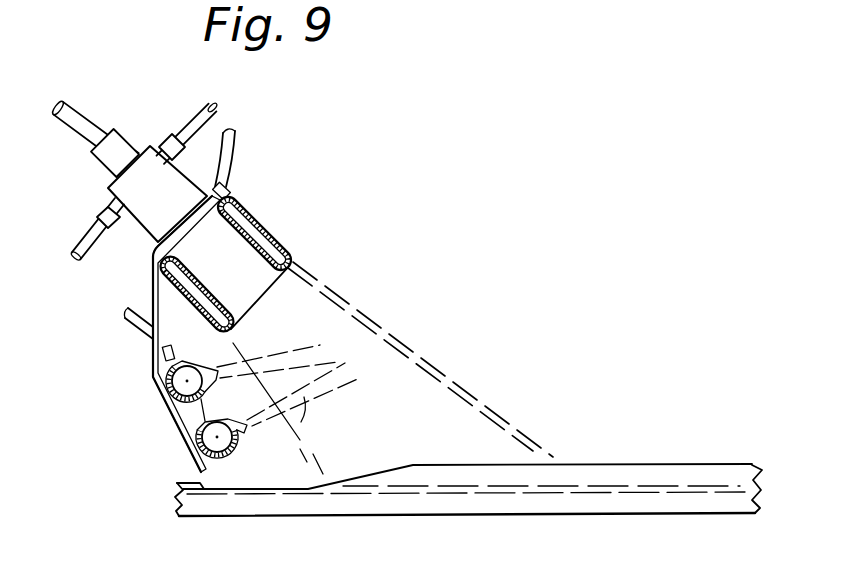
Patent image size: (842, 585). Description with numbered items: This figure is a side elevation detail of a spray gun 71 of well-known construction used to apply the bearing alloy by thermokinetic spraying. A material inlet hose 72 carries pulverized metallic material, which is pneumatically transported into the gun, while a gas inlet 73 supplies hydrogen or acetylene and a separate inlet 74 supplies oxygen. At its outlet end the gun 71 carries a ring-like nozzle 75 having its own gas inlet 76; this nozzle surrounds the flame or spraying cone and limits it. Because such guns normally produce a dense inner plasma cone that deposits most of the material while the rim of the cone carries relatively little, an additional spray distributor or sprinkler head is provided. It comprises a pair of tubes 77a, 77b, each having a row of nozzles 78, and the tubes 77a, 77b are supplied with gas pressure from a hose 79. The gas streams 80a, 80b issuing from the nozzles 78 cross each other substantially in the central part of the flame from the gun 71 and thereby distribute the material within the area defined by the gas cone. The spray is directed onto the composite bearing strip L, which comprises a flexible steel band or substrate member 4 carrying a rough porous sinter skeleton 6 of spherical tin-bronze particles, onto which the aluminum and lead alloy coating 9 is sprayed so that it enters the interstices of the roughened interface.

The spray gun 71 is at (281, 200).
The material inlet hose 72 is at (78, 130).
The gas inlet 73 is at (90, 233).
The inlet for oxygen 74 is at (197, 113).
The ring-like nozzle 75 is at (279, 235).
The gas inlet 76 is at (232, 156).
The tube 77a is at (168, 393).
The tube 77b is at (207, 442).
The nozzles 78 is at (213, 380).
The hose 79 is at (135, 323).
The gas stream 80a is at (311, 345).
The gas stream 80b is at (288, 409).
The aluminum and lead alloy coating 9 is at (594, 464).
The flexible steel band 4 is at (253, 510).
The sinter skeleton 6 is at (178, 489).
The composite bearing strip L is at (670, 455).